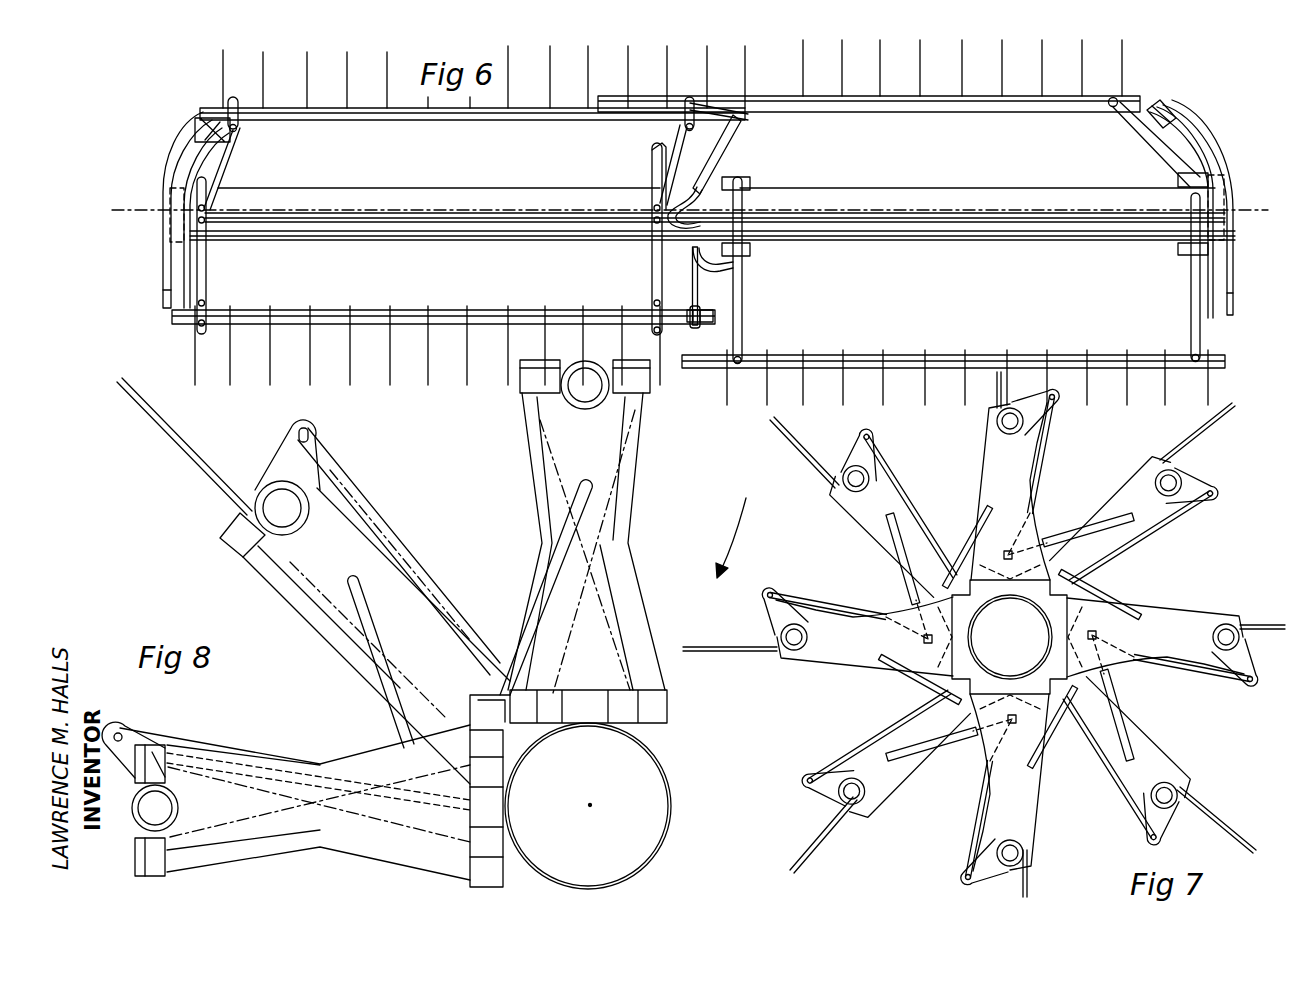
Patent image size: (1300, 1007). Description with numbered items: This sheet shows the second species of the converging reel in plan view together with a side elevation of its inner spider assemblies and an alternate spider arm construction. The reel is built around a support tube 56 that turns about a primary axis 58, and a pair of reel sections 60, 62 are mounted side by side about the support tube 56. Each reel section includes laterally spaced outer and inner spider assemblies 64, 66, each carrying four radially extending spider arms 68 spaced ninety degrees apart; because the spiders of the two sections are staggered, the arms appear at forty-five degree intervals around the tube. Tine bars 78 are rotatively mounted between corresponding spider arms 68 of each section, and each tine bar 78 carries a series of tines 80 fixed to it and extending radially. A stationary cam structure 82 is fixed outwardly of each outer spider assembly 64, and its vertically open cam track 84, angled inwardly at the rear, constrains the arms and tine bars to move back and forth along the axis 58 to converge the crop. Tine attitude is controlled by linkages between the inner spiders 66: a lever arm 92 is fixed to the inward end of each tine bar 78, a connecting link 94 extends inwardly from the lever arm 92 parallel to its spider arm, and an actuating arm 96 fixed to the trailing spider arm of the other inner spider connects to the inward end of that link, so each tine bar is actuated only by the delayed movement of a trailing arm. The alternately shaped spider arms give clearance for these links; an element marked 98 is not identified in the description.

In FIG. 6, the support tube 56 is at (512, 241).
In FIG. 8, the support tube 56 is at (650, 762).
In FIG. 7, the support tube 56 is at (972, 650).
In FIG. 6, the primary axis 58 is at (152, 211).
In FIG. 8, the primary axis 58 is at (590, 805).
In FIG. 6, the reel section 60 is at (450, 248).
In FIG. 6, the reel section 62 is at (1014, 254).
In FIG. 6, the outer spider assembly 64 is at (207, 270).
In FIG. 6, the inner spider assembly 66 is at (646, 279).
In FIG. 8, the spider arm 68 is at (342, 628).
In FIG. 7, the spider arm 68 is at (1126, 492).
In FIG. 6, the tine bar 78 is at (478, 110).
In FIG. 8, the tine bar 78 is at (272, 505).
In FIG. 7, the tine bar 78 is at (1012, 420).
In FIG. 6, the tine 80 is at (221, 68).
In FIG. 8, the tine 80 is at (174, 432).
In FIG. 7, the tine 80 is at (997, 384).
In FIG. 6, the cam structure 82 is at (165, 152).
In FIG. 6, the cam track 84 is at (170, 288).
In FIG. 6, the lever arm 92 is at (700, 332).
In FIG. 8, the lever arm 92 is at (290, 420).
In FIG. 7, the lever arm 92 is at (860, 446).
In FIG. 6, the connecting link 94 is at (733, 131).
In FIG. 8, the connecting link 94 is at (363, 517).
In FIG. 7, the connecting link 94 is at (1052, 436).
In FIG. 6, the actuating arm 96 is at (736, 155).
In FIG. 8, the actuating arm 96 is at (512, 625).
In FIG. 7, the actuating arm 96 is at (1092, 528).
In FIG. 7, the pivot bar 98 is at (978, 524).